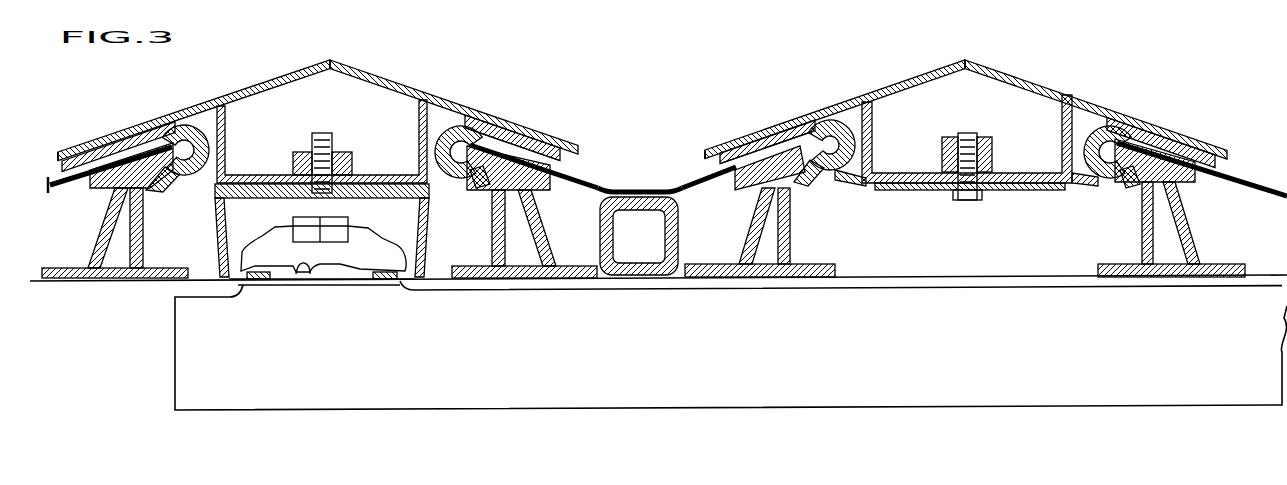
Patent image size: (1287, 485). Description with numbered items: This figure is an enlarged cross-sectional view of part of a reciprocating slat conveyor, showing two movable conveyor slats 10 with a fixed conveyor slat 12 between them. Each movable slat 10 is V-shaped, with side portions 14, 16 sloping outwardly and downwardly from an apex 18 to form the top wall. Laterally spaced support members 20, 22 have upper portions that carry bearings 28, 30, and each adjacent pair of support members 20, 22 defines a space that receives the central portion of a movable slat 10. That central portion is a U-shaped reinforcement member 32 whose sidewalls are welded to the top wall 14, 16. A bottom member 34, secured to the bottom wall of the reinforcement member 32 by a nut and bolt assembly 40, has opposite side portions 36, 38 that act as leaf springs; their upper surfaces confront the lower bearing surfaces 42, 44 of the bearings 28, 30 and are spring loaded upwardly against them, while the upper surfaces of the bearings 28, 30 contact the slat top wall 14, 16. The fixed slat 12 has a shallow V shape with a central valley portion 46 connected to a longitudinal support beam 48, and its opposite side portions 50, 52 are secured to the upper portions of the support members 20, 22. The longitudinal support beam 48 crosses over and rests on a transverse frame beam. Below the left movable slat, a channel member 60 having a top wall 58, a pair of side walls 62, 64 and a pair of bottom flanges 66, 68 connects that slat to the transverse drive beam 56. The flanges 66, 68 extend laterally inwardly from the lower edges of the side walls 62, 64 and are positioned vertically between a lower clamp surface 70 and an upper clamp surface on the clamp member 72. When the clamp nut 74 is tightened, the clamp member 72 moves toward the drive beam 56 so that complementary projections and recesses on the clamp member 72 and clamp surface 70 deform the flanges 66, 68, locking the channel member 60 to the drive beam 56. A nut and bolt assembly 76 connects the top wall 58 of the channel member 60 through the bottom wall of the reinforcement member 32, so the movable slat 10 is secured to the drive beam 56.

The movable conveyor slat 10 is at (244, 92).
The fixed conveyor slat 12 is at (50, 176).
The side portion of top wall 14 is at (148, 120).
The side portion of top wall 16 is at (445, 104).
The apex 18 is at (333, 57).
The support member 20 is at (106, 246).
The support member 22 is at (527, 247).
The bearing 28 is at (113, 140).
The bearing 30 is at (497, 135).
The U-shaped reinforcement member 32 is at (420, 118).
The bottom member 34 is at (931, 190).
The side portion of bottom member 36 is at (845, 186).
The side portion of bottom member 38 is at (1120, 186).
The nut and bolt assembly 40 is at (957, 132).
The lower bearing surface 42 is at (175, 185).
The lower bearing surface 44 is at (462, 188).
The central valley portion 46 is at (633, 183).
The longitudinal support beam 48 is at (665, 255).
The side portion of fixed slat 50 is at (535, 140).
The side portion of fixed slat 52 is at (783, 132).
The transverse drive beam 56 is at (947, 300).
The top wall of channel member 58 is at (260, 178).
The channel member 60 is at (220, 262).
The side wall of channel member 62 is at (220, 225).
The side wall of channel member 64 is at (427, 255).
The bottom flange 66 is at (262, 280).
The bottom flange 68 is at (388, 282).
The lower clamp surface 70 is at (308, 275).
The clamp member 72 is at (365, 245).
The clamp nut 74 is at (343, 220).
The nut and bolt assembly 76 is at (318, 130).